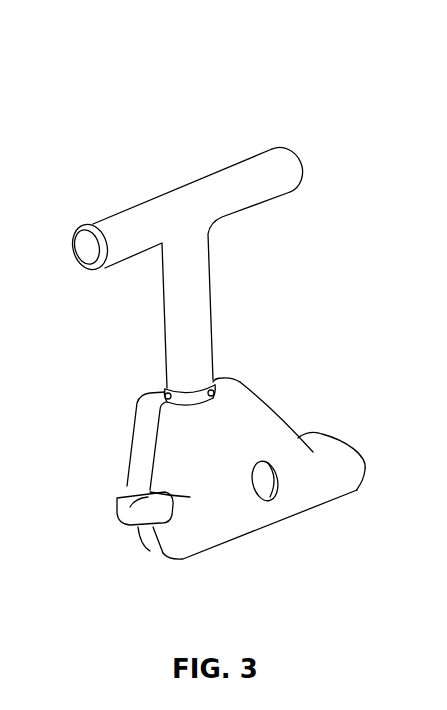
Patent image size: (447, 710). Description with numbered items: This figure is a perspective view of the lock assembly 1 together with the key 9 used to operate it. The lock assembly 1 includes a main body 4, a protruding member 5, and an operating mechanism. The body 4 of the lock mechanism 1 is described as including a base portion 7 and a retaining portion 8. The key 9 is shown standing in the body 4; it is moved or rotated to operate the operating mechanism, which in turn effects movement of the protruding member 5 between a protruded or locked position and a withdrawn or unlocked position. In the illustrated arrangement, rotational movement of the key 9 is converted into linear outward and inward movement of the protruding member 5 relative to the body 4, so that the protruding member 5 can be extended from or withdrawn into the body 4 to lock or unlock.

The lock assembly 1 is at (173, 109).
The main body 4 is at (257, 418).
The protruding member 5 is at (120, 505).
The base portion 7 is at (342, 462).
The retaining portion 8 is at (232, 392).
The key 9 is at (200, 285).